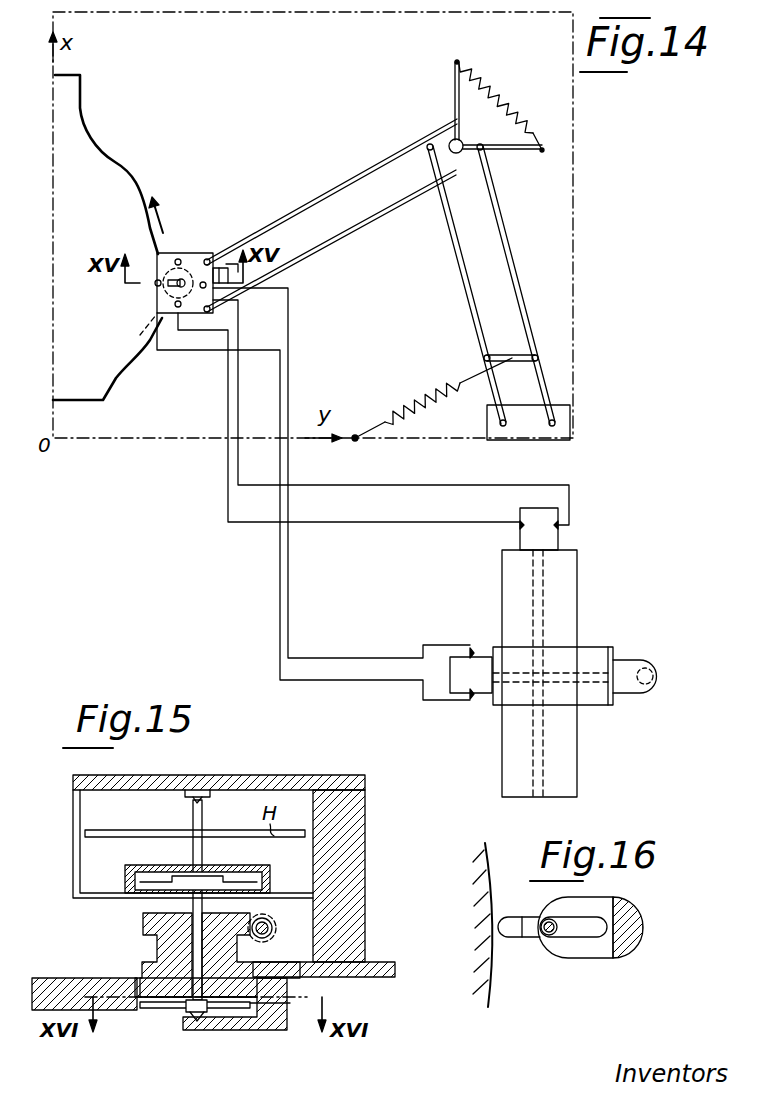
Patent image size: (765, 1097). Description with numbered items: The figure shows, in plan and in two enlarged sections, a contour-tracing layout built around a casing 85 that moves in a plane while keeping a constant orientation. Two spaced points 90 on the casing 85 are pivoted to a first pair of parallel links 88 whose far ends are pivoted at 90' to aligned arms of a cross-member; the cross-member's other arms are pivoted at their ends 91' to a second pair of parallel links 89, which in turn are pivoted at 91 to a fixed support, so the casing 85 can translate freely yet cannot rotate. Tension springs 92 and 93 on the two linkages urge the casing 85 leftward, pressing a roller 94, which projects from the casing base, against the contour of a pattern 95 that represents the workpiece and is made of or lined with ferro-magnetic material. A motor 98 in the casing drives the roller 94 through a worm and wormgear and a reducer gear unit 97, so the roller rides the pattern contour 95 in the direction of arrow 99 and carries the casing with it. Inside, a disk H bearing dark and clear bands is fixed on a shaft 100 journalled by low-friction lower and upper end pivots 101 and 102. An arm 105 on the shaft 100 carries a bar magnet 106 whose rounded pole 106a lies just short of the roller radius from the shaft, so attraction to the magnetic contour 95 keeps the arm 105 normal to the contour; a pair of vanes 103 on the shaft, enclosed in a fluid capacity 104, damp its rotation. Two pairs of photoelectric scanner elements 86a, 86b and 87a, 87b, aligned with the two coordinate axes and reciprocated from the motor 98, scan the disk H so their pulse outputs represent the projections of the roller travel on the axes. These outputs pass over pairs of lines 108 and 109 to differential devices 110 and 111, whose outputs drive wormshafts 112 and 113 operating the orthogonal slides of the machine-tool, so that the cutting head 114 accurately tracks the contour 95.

In FIG. 14, the casing 85 is at (157, 268).
In FIG. 15, the casing 85 is at (340, 840).
In FIG. 14, the photoelectric scanner element 86a is at (155, 284).
In FIG. 14, the photoelectric scanner element 86b is at (203, 289).
In FIG. 14, the photoelectric scanner element 87a is at (175, 260).
In FIG. 14, the photoelectric scanner element 87b is at (178, 308).
In FIG. 14, the first pair of parallel links 88 is at (376, 203).
In FIG. 14, the second pair of parallel links 89 is at (503, 258).
In FIG. 14, the pivot points 90 is at (237, 310).
In FIG. 14, the pivots 90' is at (437, 100).
In FIG. 14, the fixed-support pivots 91 is at (528, 439).
In FIG. 14, the cross-member pivot ends 91' is at (446, 190).
In FIG. 14, the tension spring 92 is at (432, 400).
In FIG. 14, the tension spring 93 is at (516, 112).
In FIG. 14, the roller 94 is at (140, 336).
In FIG. 15, the roller 94 is at (146, 975).
In FIG. 14, the pattern contour 95 is at (137, 186).
In FIG. 15, the pattern contour 95 is at (95, 985).
In FIG. 16, the pattern contour 95 is at (483, 912).
In FIG. 14, the reducer gear unit 97 is at (212, 270).
In FIG. 14, the motor 98 is at (238, 258).
In FIG. 14, the arrow 99 is at (159, 214).
In FIG. 15, the shaft 100 is at (205, 852).
In FIG. 16, the shaft 100 is at (550, 936).
In FIG. 15, the lower end pivot 101 is at (186, 1016).
In FIG. 15, the upper end pivot 102 is at (197, 792).
In FIG. 15, the damper vanes 103 is at (156, 886).
In FIG. 15, the fluid capacity 104 is at (128, 884).
In FIG. 15, the arm 105 is at (290, 1003).
In FIG. 16, the arm 105 is at (570, 930).
In FIG. 15, the bar magnet 106 is at (142, 1008).
In FIG. 16, the bar magnet 106 is at (514, 917).
In FIG. 16, the rounded magnet pole 106a is at (504, 938).
In FIG. 14, the pair of lines 108 is at (385, 498).
In FIG. 14, the pair of lines 109 is at (337, 680).
In FIG. 14, the differential device 110 is at (540, 530).
In FIG. 14, the differential device 111 is at (462, 680).
In FIG. 14, the wormshaft 112 is at (543, 590).
In FIG. 14, the wormshaft 113 is at (582, 672).
In FIG. 14, the cutting head 114 is at (648, 680).